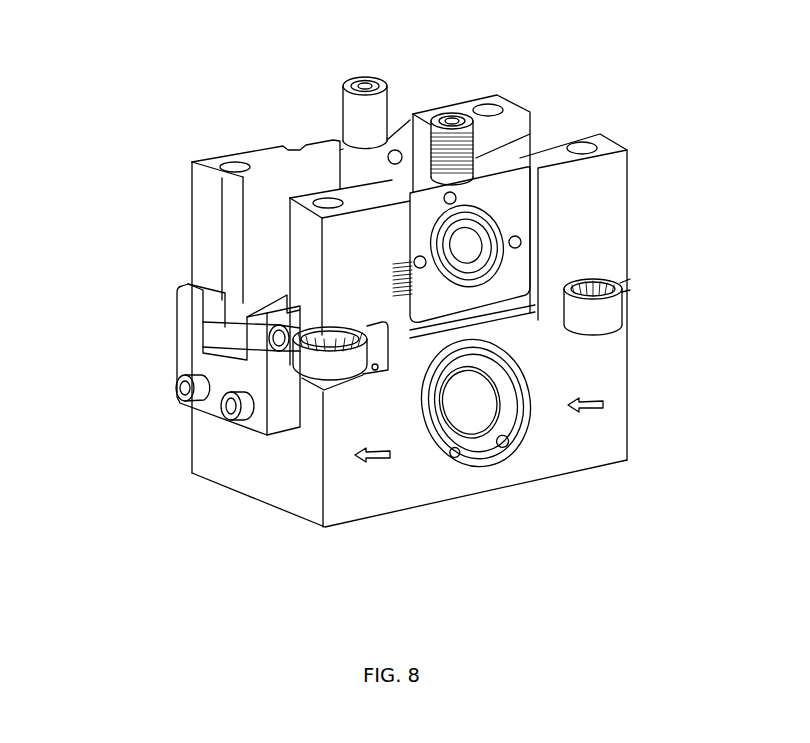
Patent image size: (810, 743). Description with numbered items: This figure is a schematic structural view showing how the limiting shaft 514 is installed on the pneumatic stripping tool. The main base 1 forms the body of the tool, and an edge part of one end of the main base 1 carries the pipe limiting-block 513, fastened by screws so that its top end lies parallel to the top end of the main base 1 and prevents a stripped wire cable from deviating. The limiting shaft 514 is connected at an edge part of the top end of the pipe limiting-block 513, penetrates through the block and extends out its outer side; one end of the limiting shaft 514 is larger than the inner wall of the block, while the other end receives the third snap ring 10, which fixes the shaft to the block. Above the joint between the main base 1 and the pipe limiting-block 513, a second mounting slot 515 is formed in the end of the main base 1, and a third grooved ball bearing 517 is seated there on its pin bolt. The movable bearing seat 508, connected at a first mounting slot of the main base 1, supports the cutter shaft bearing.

The main base 1 is at (552, 430).
The movable bearing seat 508 is at (495, 196).
The pipe limiting-block 513 is at (183, 343).
The limiting shaft 514 is at (223, 315).
The second mounting slot 515 is at (378, 368).
The third grooved ball bearing 517 is at (603, 307).
The third snap ring 10 is at (183, 385).